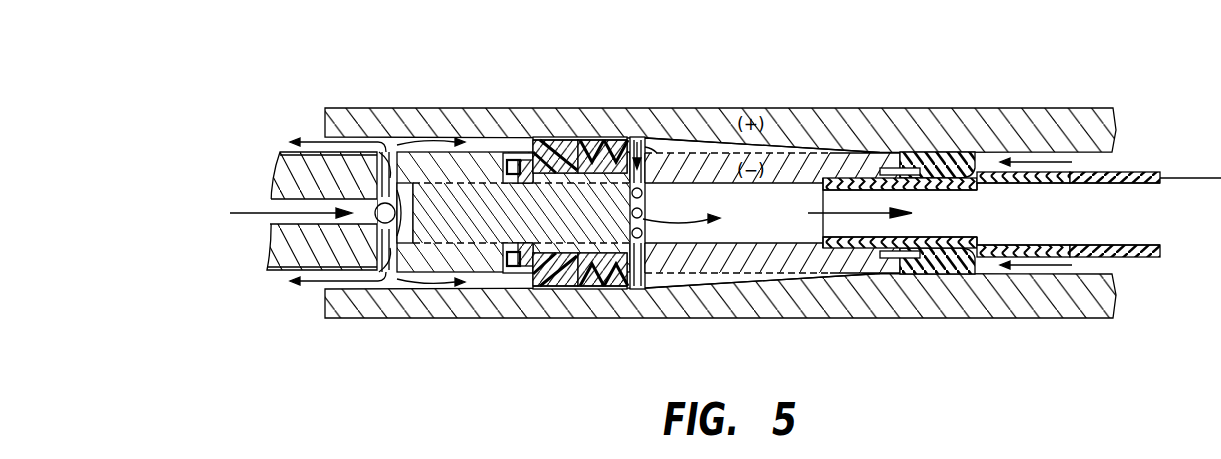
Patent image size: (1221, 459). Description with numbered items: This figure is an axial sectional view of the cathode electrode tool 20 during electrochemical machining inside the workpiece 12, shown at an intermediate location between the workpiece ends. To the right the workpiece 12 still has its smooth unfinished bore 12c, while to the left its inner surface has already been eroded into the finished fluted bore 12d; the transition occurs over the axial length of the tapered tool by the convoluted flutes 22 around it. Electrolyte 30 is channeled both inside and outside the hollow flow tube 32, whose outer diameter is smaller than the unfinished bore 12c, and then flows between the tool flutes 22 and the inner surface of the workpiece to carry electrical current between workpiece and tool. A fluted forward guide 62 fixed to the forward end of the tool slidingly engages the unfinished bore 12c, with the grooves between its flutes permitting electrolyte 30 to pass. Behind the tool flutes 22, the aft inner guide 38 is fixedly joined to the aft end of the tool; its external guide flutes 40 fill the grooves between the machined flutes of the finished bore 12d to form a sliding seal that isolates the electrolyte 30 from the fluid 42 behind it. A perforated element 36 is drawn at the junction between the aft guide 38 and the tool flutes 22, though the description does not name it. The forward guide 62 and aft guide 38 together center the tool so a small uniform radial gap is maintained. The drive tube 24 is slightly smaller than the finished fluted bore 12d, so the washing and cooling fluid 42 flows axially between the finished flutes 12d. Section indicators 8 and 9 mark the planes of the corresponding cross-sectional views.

The section line 8- 8 is at (964, 361).
The section line 9- 9 is at (664, 361).
The workpiece 12 is at (1090, 108).
The unfinished bore 12c is at (1079, 276).
The finished fluted bore 12d is at (498, 280).
The electrode tool 20 is at (757, 255).
The tool flutes 22 is at (707, 147).
The drive tube 24 is at (283, 150).
The electrolyte 30 is at (805, 213).
The flow tube 32 is at (1130, 258).
The perforated plate 36 is at (637, 262).
The aft inner guide 38 is at (555, 274).
The guide flutes 40 is at (557, 143).
The fluid 42 is at (363, 152).
The forward guide 62 is at (933, 140).